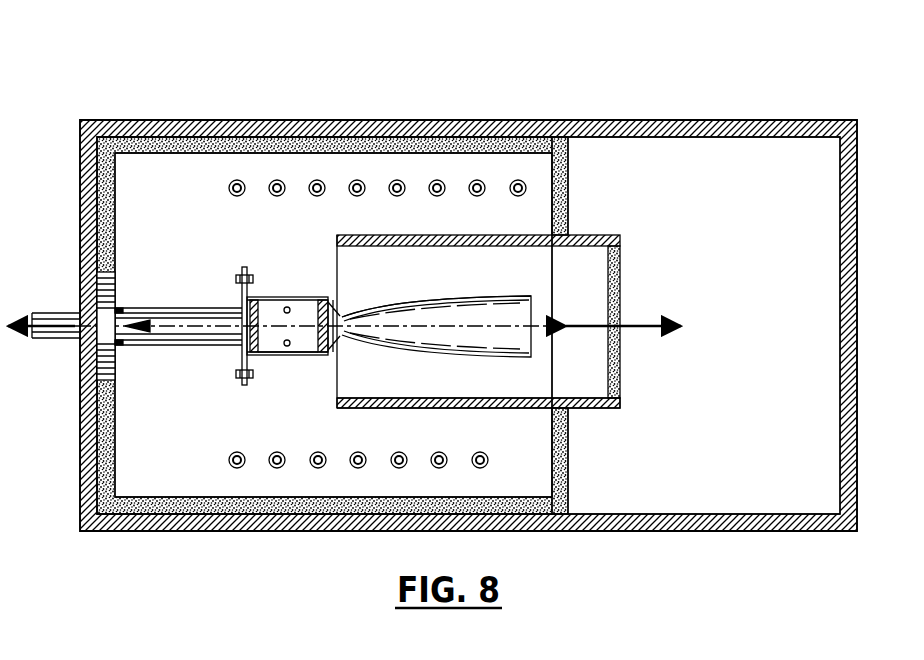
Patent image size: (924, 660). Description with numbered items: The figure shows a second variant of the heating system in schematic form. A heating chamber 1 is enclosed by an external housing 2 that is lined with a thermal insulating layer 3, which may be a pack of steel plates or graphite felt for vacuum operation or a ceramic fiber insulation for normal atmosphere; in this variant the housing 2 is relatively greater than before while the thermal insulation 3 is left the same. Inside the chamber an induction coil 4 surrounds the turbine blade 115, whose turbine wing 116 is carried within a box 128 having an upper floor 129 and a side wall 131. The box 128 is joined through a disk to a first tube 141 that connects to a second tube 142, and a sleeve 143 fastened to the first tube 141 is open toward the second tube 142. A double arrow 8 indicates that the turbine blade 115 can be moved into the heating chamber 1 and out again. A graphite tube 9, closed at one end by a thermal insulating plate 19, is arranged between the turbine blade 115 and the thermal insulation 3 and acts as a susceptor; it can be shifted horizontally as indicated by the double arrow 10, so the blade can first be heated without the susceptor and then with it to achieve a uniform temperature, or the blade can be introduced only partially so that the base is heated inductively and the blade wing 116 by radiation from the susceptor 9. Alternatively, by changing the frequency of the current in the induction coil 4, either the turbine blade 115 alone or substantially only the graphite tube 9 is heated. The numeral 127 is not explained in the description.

The heating chamber 1 is at (116, 90).
The external housing 2 is at (838, 318).
The thermal insulating layer 3 is at (567, 178).
The induction coil 4 is at (490, 461).
The double arrow 8 is at (63, 313).
The graphite tube 9 is at (590, 409).
The double arrow 10 is at (628, 322).
The thermal insulating plate 19 is at (612, 256).
The turbine blade 115 is at (466, 294).
The turbine wing 116 is at (410, 297).
The guide tube 127 is at (193, 286).
The box 128 is at (266, 285).
The upper floor 129 is at (297, 295).
The side wall 131 is at (303, 356).
The first tube 141 is at (178, 348).
The second tube 142 is at (57, 340).
The sleeve 143 is at (116, 284).